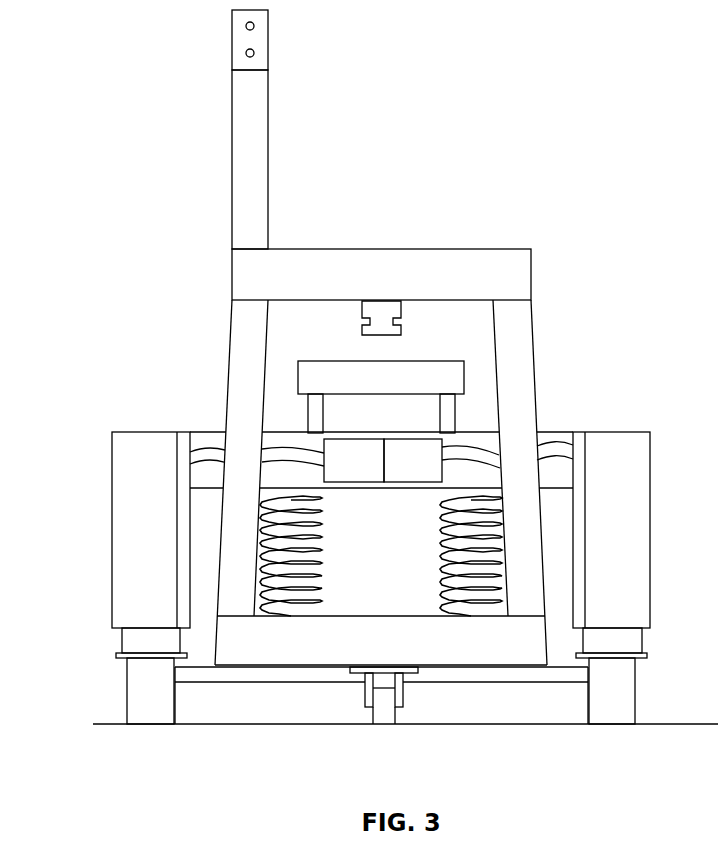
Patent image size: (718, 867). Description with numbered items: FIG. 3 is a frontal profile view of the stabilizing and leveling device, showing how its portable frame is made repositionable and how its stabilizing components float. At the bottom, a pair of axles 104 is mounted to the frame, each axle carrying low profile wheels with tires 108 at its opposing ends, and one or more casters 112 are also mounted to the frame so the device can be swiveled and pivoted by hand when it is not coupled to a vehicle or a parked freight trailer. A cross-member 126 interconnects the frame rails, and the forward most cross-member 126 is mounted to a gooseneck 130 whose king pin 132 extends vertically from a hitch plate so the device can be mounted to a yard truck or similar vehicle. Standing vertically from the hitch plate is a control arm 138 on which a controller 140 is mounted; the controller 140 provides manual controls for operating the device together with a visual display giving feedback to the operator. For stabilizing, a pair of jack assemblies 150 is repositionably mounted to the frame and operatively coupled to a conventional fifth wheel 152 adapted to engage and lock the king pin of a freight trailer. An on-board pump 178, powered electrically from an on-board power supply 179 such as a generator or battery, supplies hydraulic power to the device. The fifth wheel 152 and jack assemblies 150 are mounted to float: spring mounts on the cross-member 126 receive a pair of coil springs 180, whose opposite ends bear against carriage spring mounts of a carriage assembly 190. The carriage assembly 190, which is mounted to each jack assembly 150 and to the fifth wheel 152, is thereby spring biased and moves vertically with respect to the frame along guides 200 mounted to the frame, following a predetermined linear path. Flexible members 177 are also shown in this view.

The axles 104 is at (557, 672).
The tires 108 is at (148, 712).
The casters 112 is at (383, 710).
The cross-member 126 is at (278, 647).
The gooseneck 130 is at (521, 333).
The king pin 132 is at (381, 303).
The control arm 138 is at (263, 125).
The controller 140 is at (263, 40).
The jack assemblies 150 is at (122, 587).
The fifth wheel 152 is at (310, 387).
The flexible members 177 is at (205, 455).
The on-board pump 178 is at (350, 458).
The on-board power supply 179 is at (410, 473).
The coil springs 180 is at (322, 592).
The carriage assembly 190 is at (545, 437).
The guides 200 is at (185, 485).